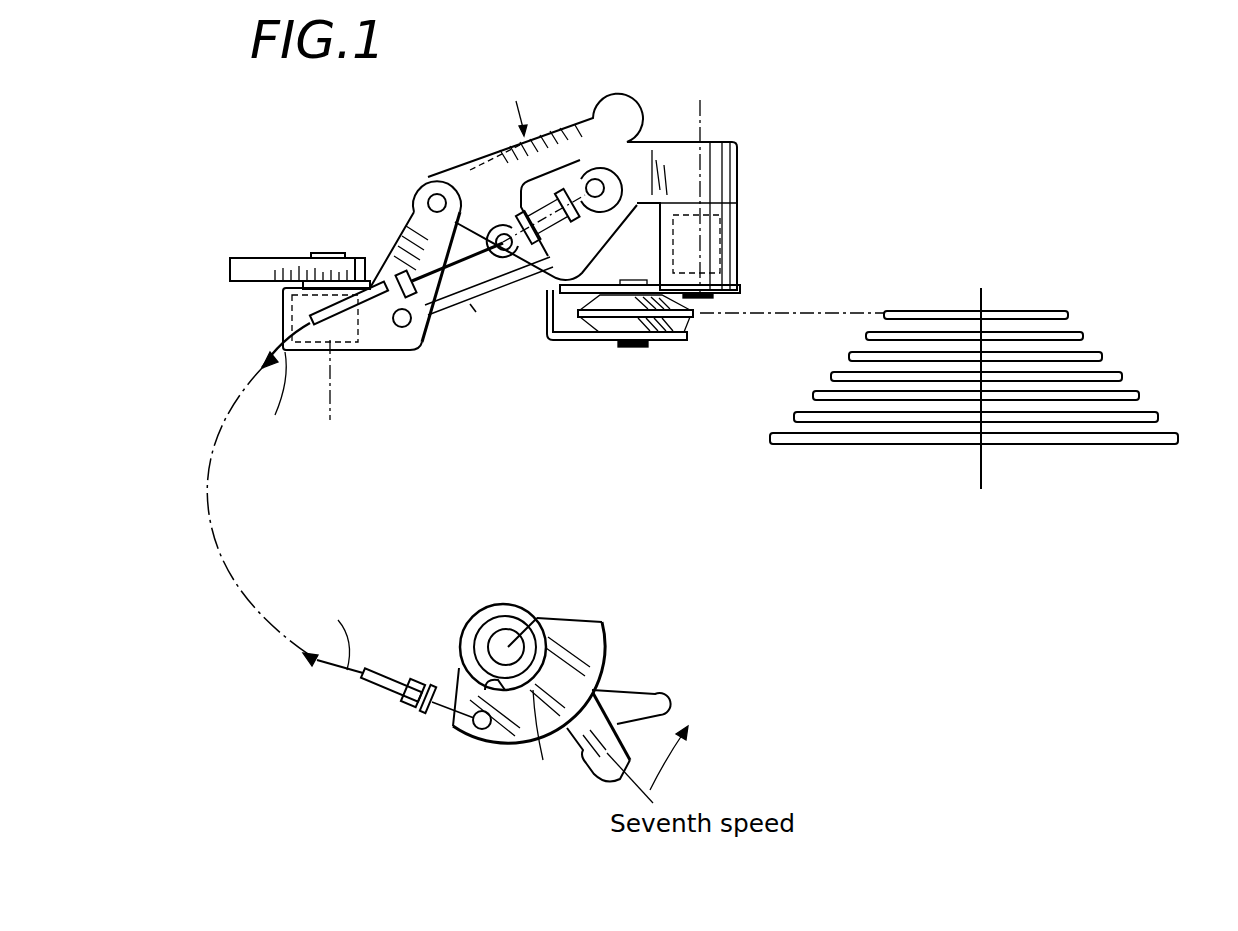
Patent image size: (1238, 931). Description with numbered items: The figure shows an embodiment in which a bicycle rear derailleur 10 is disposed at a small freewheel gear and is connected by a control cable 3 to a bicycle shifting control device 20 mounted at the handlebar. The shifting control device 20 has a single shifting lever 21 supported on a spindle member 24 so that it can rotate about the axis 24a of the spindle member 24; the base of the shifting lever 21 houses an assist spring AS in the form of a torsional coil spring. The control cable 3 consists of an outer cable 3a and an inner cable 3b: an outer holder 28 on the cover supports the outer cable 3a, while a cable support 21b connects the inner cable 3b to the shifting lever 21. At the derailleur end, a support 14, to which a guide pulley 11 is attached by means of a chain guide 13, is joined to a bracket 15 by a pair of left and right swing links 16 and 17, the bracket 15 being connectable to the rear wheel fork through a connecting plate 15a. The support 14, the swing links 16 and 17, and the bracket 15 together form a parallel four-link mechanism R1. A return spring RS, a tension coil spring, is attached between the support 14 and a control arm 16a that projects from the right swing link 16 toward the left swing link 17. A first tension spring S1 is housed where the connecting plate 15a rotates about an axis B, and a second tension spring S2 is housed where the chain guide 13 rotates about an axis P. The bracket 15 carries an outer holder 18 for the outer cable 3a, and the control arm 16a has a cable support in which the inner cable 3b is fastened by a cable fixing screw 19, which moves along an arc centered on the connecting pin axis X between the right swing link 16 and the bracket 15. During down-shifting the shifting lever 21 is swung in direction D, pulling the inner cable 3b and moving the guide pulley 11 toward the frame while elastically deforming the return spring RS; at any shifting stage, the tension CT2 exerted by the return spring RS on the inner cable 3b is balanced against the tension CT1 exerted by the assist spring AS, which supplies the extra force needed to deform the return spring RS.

The control cable 3 is at (214, 417).
The outer cable 3a is at (352, 338).
The inner cable 3b is at (469, 312).
The rear derailleur 10 is at (646, 362).
The guide pulley 11 is at (620, 320).
The chain guide 13 is at (678, 342).
The support 14 is at (738, 156).
The bracket 15 is at (412, 348).
The connecting plate 15a is at (262, 268).
The right swing link 16 is at (487, 152).
The control arm 16a is at (413, 212).
The left swing link 17 is at (489, 300).
The outer holder 18 is at (399, 283).
The cable fixing screw 19 is at (500, 230).
The bicycle shifting control device 20 is at (458, 626).
The shifting lever 21 is at (600, 680).
The cable support 21b is at (483, 730).
The spindle member 24 is at (508, 647).
The axis of the spindle member 24a is at (544, 613).
The outer holder 28 is at (425, 714).
The connecting pin axis X is at (435, 174).
The axis P is at (699, 179).
The parallel four-link mechanism R1 is at (524, 101).
The first tension spring S1 is at (286, 326).
The second tension spring S2 is at (736, 254).
The return spring RS is at (548, 266).
The axis B is at (330, 401).
The cable tension CT1 is at (319, 628).
The cable tension CT2 is at (275, 397).
The assist spring AS is at (550, 744).
The swing direction D is at (681, 757).